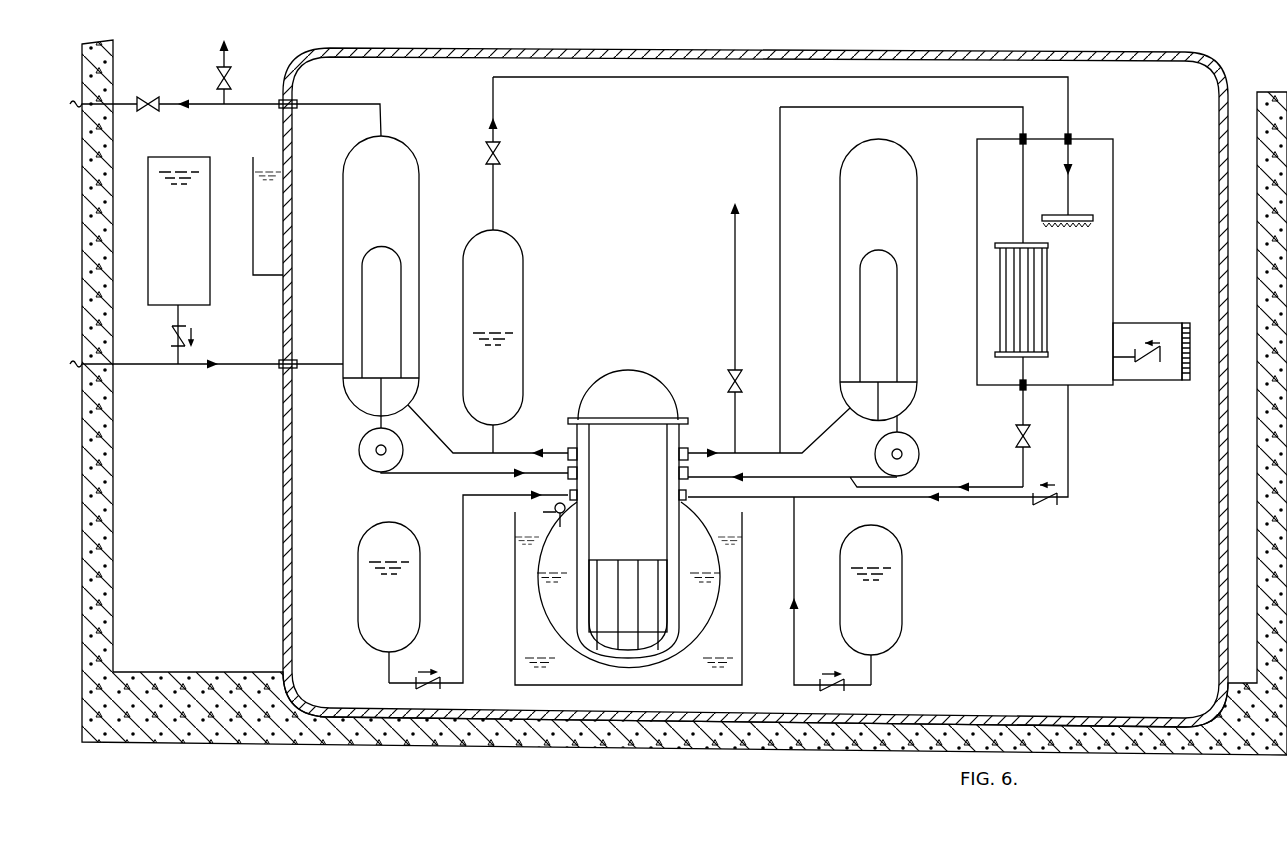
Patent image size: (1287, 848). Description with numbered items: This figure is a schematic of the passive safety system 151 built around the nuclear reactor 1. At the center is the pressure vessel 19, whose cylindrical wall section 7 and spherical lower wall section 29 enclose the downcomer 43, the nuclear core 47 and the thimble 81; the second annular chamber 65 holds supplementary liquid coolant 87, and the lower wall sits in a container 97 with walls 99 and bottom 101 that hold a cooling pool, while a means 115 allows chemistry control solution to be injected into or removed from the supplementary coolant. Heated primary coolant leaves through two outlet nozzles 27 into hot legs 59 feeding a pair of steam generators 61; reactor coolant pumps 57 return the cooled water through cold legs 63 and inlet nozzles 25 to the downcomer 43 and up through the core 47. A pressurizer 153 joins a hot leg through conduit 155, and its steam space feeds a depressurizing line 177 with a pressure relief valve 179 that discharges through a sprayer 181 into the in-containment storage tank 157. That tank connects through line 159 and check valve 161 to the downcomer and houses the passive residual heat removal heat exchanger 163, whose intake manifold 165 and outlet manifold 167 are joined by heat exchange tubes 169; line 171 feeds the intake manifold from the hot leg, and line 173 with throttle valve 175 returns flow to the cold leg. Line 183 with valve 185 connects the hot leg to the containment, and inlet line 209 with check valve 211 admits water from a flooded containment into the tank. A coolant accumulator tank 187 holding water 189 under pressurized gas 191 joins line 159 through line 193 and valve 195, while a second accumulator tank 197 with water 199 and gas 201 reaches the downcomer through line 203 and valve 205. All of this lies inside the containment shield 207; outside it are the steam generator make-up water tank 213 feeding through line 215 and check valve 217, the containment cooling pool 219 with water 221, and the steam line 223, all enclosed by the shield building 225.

The nuclear reactor 1 is at (705, 513).
The cylindrical wall section 7 is at (672, 503).
The pressure vessel 19 is at (740, 600).
The inlet nozzle 25 is at (570, 488).
The outlet nozzle 27 is at (568, 448).
The pressure resistant spherical lower wall section 29 is at (540, 577).
The downcomer 43 is at (592, 530).
The nuclear core 47 is at (641, 578).
The reactor coolant pump 57 is at (368, 471).
The hot leg line 59 is at (462, 450).
The steam generator 61 is at (403, 137).
The cold leg line 63 is at (455, 474).
The second annular chamber 65 is at (561, 631).
The thimble 81 is at (657, 583).
The supplementary liquid coolant 87 is at (572, 632).
The container 97 is at (750, 570).
The container wall 99 is at (738, 646).
The container bottom 101 is at (697, 685).
The chemistry control solution injection means 115 is at (533, 508).
The passive safety system 151 is at (1238, 108).
The pressurizer 153 is at (527, 307).
The conduit 155 is at (495, 446).
The in-containment storage tank 157 is at (974, 216).
The line 159 is at (978, 499).
The check valve 161 is at (1043, 505).
The passive residual heat removal heat exchanger 163 is at (1058, 312).
The intake manifold 165 is at (1001, 243).
The outlet manifold 167 is at (1037, 361).
The heat exchange tubes 169 is at (998, 318).
The line 171 is at (893, 110).
The line 173 is at (978, 482).
The throttle valve 175 is at (1030, 438).
The depressurizing line 177 is at (608, 78).
The pressure relief valve 179 is at (500, 156).
The sprayer 181 is at (1085, 210).
The line 183 is at (733, 230).
The power operated valve 185 is at (733, 370).
The coolant accumulator tank 187 is at (927, 598).
The water 189 is at (872, 626).
The pressurized gas 191 is at (885, 551).
The line 193 is at (795, 556).
The valve 195 is at (832, 690).
The second coolant accumulator tank 197 is at (357, 608).
The water 199 is at (392, 605).
The pressurized gas 201 is at (368, 548).
The line 203 is at (465, 572).
The valve 205 is at (414, 684).
The containment shield 207 is at (283, 455).
The inlet line 209 is at (1122, 345).
The check valve 211 is at (1160, 350).
The steam generator make-up water tank 213 is at (207, 157).
The line 215 is at (188, 366).
The check valve 217 is at (170, 335).
The containment cooling pool 219 is at (253, 196).
The water 221 is at (258, 236).
The line 223 is at (258, 100).
The shield building 225 is at (113, 530).